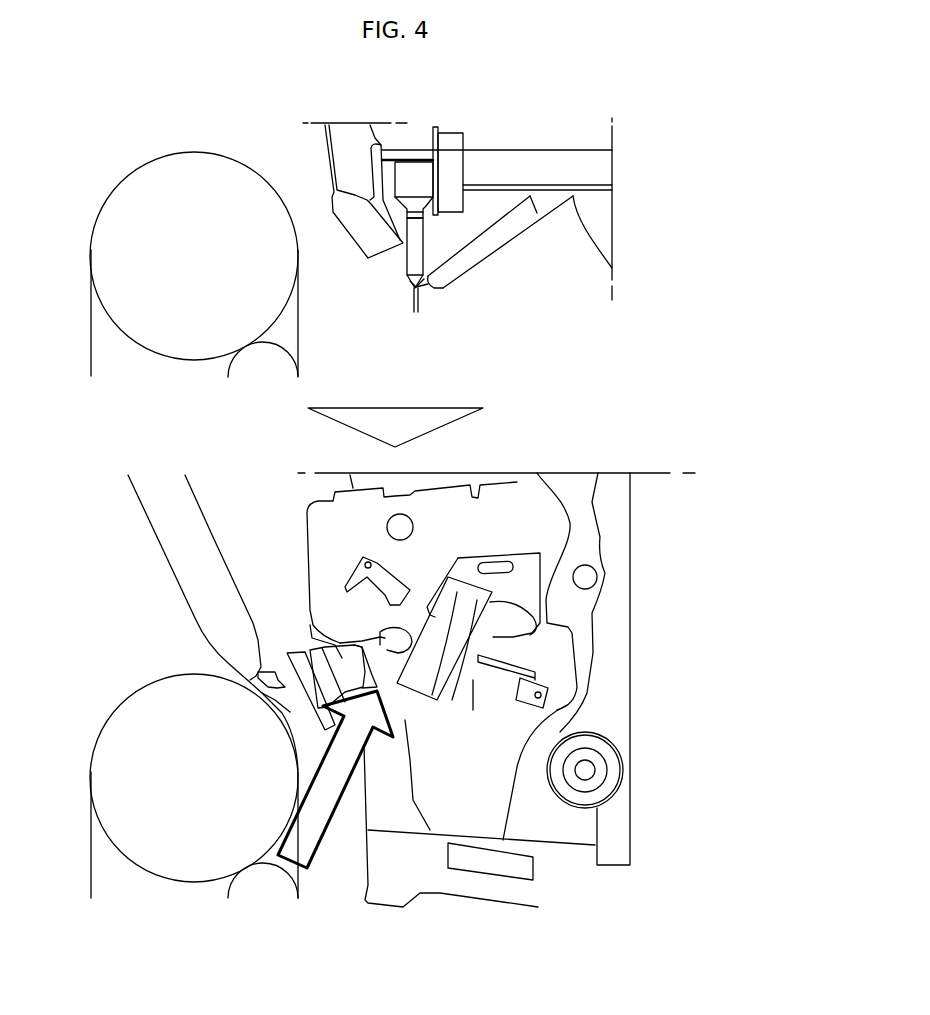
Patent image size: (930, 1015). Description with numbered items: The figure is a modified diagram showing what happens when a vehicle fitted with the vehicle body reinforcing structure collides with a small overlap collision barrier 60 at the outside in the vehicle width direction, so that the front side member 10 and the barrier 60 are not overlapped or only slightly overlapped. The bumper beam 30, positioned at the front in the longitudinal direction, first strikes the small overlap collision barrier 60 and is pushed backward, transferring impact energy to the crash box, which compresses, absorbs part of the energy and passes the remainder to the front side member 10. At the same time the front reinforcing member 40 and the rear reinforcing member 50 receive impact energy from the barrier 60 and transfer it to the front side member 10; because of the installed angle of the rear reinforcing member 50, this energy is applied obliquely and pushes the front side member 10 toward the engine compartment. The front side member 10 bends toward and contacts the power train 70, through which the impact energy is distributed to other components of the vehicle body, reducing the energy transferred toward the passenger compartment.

The front side member 10 is at (535, 157).
The bumper beam 30 is at (328, 150).
The front reinforcing member 40 is at (396, 272).
The rear reinforcing member 50 is at (497, 265).
The small overlap collision barrier 60 is at (195, 152).
The power train 70 is at (502, 495).